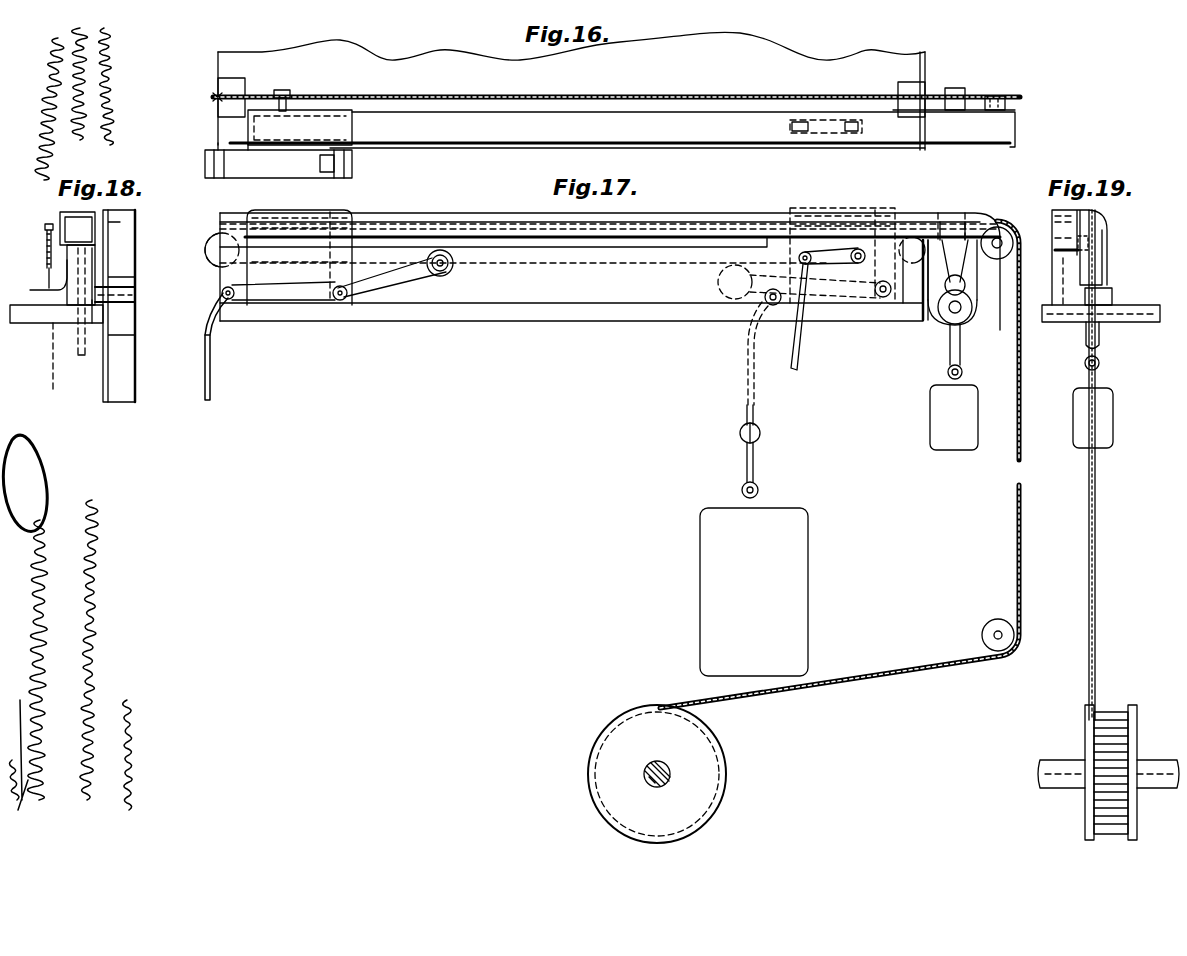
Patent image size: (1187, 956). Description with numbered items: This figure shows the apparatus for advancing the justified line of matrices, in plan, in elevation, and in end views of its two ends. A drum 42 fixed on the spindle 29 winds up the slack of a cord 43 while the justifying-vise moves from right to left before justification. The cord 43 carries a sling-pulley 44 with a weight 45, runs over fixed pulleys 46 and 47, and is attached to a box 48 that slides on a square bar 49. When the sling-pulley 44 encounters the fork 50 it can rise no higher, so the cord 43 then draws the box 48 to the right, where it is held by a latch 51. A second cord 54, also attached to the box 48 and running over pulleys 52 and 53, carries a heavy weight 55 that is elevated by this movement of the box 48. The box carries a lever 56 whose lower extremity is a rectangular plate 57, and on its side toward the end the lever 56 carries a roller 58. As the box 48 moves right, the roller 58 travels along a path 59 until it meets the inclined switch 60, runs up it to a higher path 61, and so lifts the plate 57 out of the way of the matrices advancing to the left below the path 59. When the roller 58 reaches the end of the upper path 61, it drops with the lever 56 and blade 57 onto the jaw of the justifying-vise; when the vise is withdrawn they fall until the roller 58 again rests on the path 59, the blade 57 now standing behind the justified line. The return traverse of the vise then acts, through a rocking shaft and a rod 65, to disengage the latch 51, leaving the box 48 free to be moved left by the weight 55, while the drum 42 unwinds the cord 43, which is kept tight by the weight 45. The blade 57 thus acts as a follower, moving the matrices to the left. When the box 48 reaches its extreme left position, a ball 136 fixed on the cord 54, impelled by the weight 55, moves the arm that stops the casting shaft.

In FIG. 17, the spindle 29 is at (670, 777).
In FIG. 19, the spindle 29 is at (1072, 760).
In FIG. 17, the drum 42 is at (657, 774).
In FIG. 19, the drum 42 is at (1111, 772).
In FIG. 17, the cord 43 is at (468, 226).
In FIG. 19, the cord 43 is at (1106, 600).
In FIG. 17, the sling-pulley 44 is at (982, 324).
In FIG. 19, the sling-pulley 44 is at (1112, 292).
In FIG. 16, the weight 45 is at (616, 87).
In FIG. 17, the weight 45 is at (954, 417).
In FIG. 19, the weight 45 is at (1095, 385).
In FIG. 16, the fixed pulley 46 is at (998, 97).
In FIG. 17, the fixed pulley 46 is at (1010, 230).
In FIG. 19, the fixed pulley 46 is at (1100, 230).
In FIG. 16, the fixed pulley 47 is at (922, 95).
In FIG. 17, the fixed pulley 47 is at (913, 278).
In FIG. 16, the box 48 is at (300, 127).
In FIG. 17, the box 48 is at (571, 246).
In FIG. 18, the box 48 is at (60, 217).
In FIG. 16, the square bar 49 is at (622, 130).
In FIG. 17, the square bar 49 is at (610, 262).
In FIG. 18, the square bar 49 is at (80, 286).
In FIG. 17, the fork 50 is at (952, 256).
In FIG. 16, the latch 51 is at (838, 133).
In FIG. 17, the latch 51 is at (832, 259).
In FIG. 16, the pulley 52 is at (252, 103).
In FIG. 17, the pulley 52 is at (210, 262).
In FIG. 17, the pulley 53 is at (804, 282).
In FIG. 16, the cord 54 is at (213, 98).
In FIG. 17, the cord 54 is at (478, 266).
In FIG. 17, the heavy weight 55 is at (754, 579).
In FIG. 16, the lever 56 is at (278, 160).
In FIG. 17, the lever 56 is at (289, 291).
In FIG. 18, the lever 56 is at (135, 293).
In FIG. 17, the rectangular plate 57 is at (482, 347).
In FIG. 18, the rectangular plate 57 is at (119, 306).
In FIG. 17, the roller 58 is at (221, 290).
In FIG. 18, the roller 58 is at (97, 308).
In FIG. 17, the path 59 is at (571, 305).
In FIG. 19, the path 59 is at (1101, 314).
In FIG. 18, the path 59 is at (56, 314).
In FIG. 17, the inclined switch 60 is at (405, 276).
In FIG. 17, the upper path 61 is at (610, 238).
In FIG. 17, the rod 65 is at (797, 345).
In FIG. 17, the ball 136 is at (740, 434).